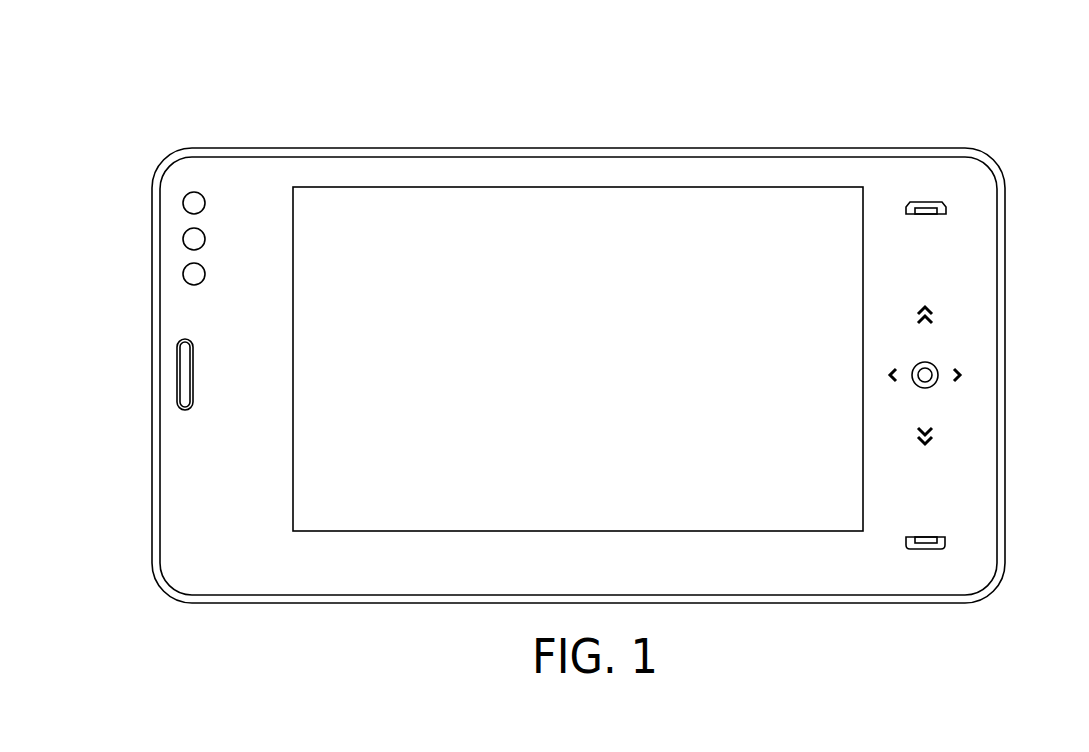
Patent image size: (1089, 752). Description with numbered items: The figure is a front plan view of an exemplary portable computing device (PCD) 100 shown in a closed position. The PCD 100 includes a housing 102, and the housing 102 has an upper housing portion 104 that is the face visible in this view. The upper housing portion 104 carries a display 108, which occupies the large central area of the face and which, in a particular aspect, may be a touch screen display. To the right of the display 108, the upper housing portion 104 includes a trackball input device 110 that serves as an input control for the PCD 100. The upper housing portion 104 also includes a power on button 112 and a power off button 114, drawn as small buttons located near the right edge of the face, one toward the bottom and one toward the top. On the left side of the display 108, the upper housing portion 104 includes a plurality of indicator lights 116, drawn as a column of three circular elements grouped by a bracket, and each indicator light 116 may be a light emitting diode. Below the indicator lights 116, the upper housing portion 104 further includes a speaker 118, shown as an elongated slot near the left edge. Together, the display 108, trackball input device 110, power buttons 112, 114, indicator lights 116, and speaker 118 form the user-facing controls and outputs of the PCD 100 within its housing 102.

The portable computing device 100 is at (1028, 80).
The housing 102 is at (190, 148).
The upper housing portion 104 is at (568, 163).
The display 108 is at (580, 515).
The trackball input device 110 is at (932, 378).
The power on button 112 is at (945, 547).
The power off button 114 is at (946, 210).
The indicator lights 116 is at (176, 192).
The speaker 118 is at (183, 373).